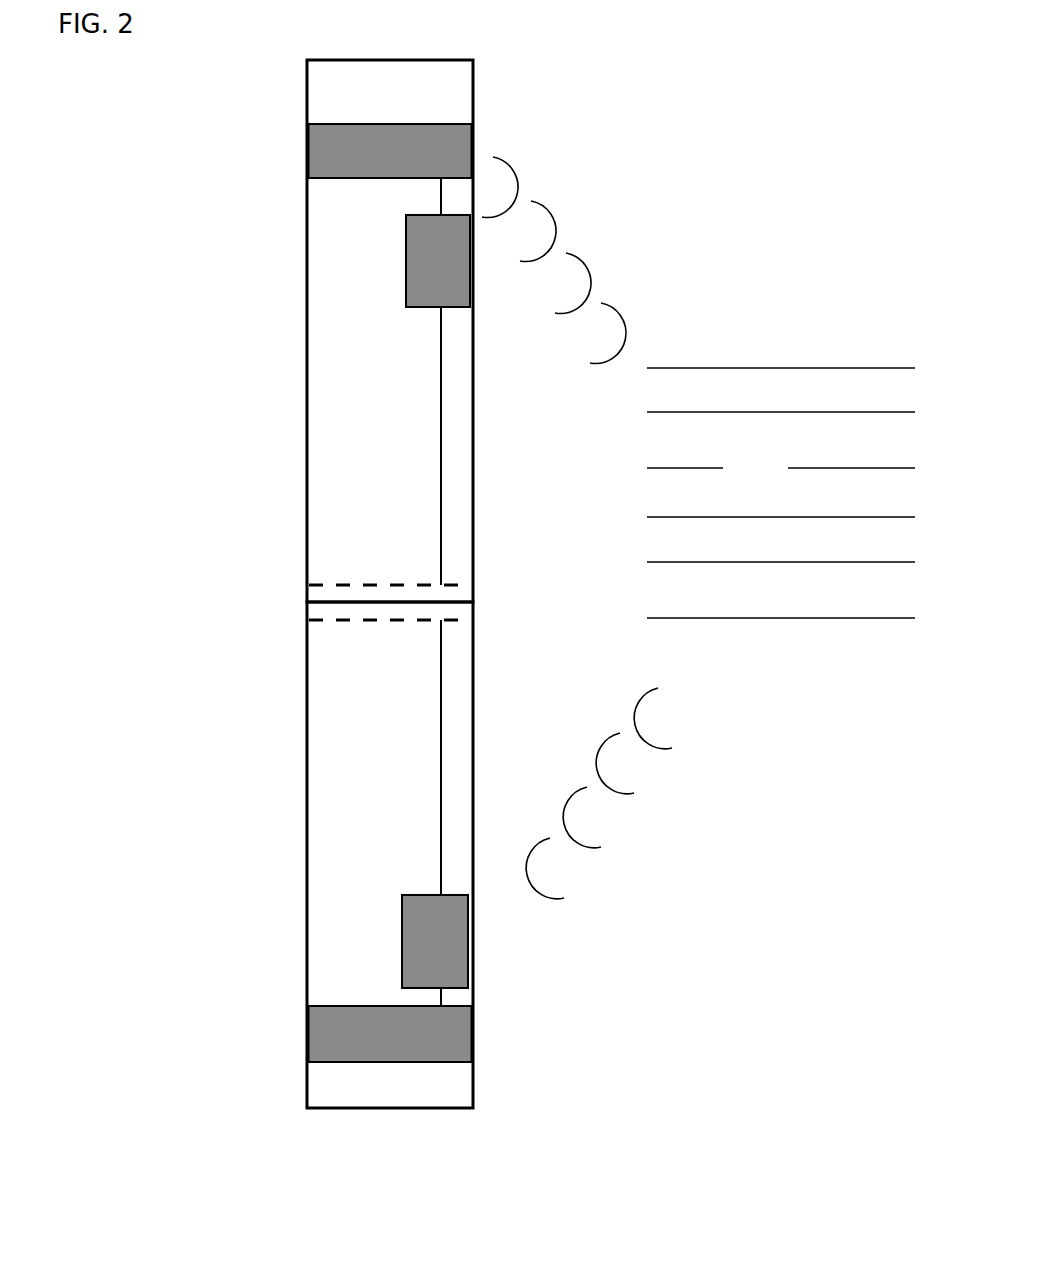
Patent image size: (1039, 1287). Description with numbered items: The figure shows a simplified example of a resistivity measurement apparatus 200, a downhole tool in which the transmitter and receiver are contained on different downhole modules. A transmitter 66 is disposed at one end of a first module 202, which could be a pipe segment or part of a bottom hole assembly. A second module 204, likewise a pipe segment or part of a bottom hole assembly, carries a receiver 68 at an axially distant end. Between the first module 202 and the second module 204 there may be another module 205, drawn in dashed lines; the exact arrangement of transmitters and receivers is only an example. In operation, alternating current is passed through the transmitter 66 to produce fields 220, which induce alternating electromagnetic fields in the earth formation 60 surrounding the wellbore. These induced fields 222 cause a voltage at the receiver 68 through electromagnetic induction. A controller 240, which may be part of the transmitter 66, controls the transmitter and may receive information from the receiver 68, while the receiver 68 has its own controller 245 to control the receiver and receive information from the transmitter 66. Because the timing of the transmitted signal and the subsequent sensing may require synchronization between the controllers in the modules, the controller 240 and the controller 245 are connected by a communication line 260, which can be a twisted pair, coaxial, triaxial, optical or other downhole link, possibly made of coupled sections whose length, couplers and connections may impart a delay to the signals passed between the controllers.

The resistivity measurement apparatus 200 is at (159, 147).
The first module 202 is at (307, 450).
The second module 204 is at (307, 848).
The another module 205 is at (307, 603).
The transmitter 66 is at (305, 150).
The receiver 68 is at (308, 1035).
The controller 240 is at (405, 265).
The controller 245 is at (400, 952).
The communication line 260 is at (440, 635).
The fields 220 is at (602, 255).
The induced fields 222 is at (648, 818).
The earth formation 60 is at (781, 493).